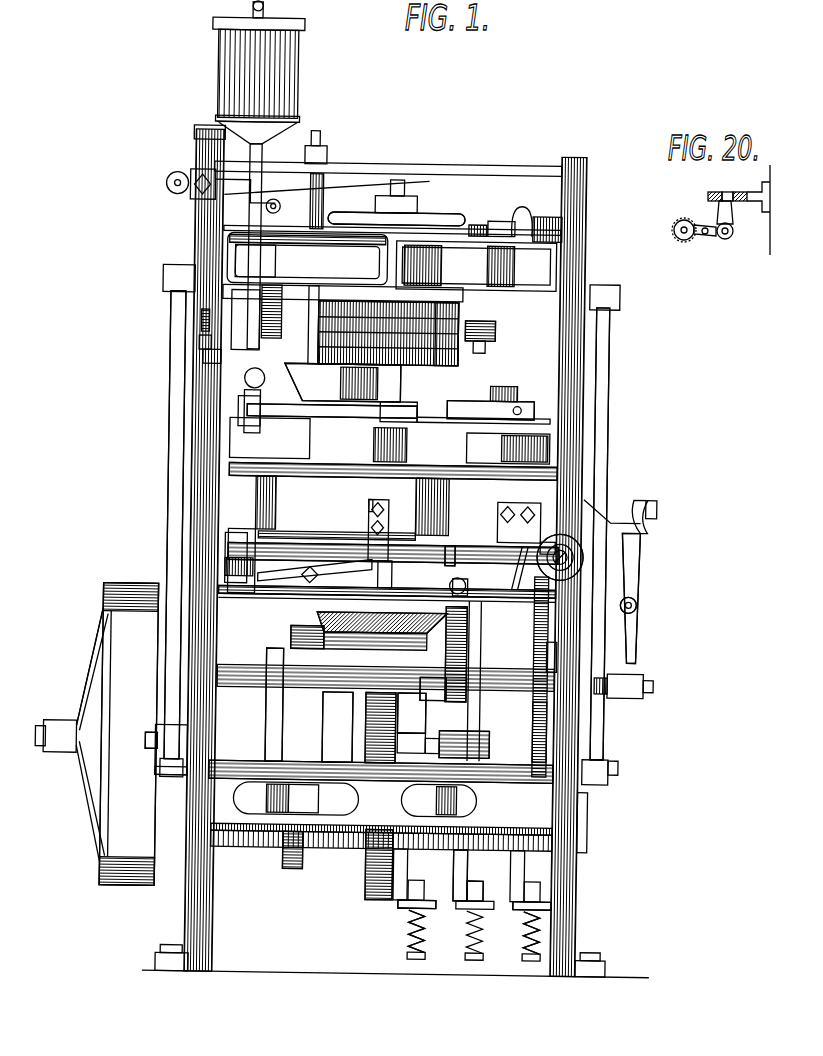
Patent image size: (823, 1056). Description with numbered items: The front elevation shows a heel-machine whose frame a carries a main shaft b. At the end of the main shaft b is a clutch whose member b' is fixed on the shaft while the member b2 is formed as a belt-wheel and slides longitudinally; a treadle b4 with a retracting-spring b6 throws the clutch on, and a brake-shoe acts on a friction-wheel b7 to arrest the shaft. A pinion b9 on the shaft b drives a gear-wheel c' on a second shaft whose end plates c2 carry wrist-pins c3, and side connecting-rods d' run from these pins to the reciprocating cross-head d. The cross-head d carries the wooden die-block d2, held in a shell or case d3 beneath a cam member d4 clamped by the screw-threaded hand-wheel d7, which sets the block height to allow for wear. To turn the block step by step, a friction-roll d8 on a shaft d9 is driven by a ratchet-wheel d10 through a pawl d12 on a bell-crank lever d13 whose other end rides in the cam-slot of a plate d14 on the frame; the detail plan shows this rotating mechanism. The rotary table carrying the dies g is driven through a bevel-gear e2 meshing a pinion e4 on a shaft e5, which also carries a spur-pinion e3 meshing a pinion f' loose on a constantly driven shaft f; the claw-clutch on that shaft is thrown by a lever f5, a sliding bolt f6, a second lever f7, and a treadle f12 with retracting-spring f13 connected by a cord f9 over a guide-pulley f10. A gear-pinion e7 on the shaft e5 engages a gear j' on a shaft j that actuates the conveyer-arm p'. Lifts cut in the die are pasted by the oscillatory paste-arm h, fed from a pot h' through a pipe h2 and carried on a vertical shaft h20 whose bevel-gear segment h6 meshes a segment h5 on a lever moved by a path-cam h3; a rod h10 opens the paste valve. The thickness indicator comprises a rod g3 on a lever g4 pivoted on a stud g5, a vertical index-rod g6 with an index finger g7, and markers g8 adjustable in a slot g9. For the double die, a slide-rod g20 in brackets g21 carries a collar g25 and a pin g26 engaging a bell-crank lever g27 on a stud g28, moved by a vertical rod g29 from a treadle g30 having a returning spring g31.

In FIG. 1, the paste pot h' is at (235, 174).
In FIG. 1, the pipe h2 is at (236, 257).
In FIG. 1, the slot g9 is at (198, 318).
In FIG. 1, the markers g8 is at (205, 340).
In FIG. 1, the index finger g7 is at (215, 356).
In FIG. 1, the rod h10 is at (236, 420).
In FIG. 1, the side connecting-rods d' is at (394, 528).
In FIG. 1, the vertical index-rod g6 is at (228, 547).
In FIG. 1, the vertical shaft h20 is at (240, 572).
In FIG. 1, the clutch member b2 is at (106, 622).
In FIG. 1, the clutch member b' is at (73, 666).
In FIG. 1, the wrist-pins c3 is at (150, 742).
In FIG. 1, the plates c2 is at (186, 780).
In FIG. 1, the path-cam h3 is at (295, 846).
In FIG. 1, the gear-wheel c' is at (356, 864).
In FIG. 1, the treadle b4 is at (403, 905).
In FIG. 1, the retracting-spring b6 is at (414, 940).
In FIG. 1, the treadle g30 is at (462, 913).
In FIG. 1, the returning spring g31 is at (486, 945).
In FIG. 1, the treadle f12 is at (556, 908).
In FIG. 1, the retracting-spring f13 is at (540, 935).
In FIG. 1, the main shaft b is at (417, 787).
In FIG. 1, the cord or chain f9 is at (548, 688).
In FIG. 1, the gear-pinion e7 is at (565, 655).
In FIG. 1, the gear j' is at (622, 612).
In FIG. 1, the lever f5 is at (640, 578).
In FIG. 1, the guide-pulley f10 is at (580, 560).
In FIG. 1, the second lever f7 is at (648, 528).
In FIG. 1, the sliding pin or bolt f6 is at (656, 500).
In FIG. 1, the brackets g21 is at (555, 512).
In FIG. 1, the cross-head d is at (507, 241).
In FIG. 1, the plate d14 is at (538, 215).
In FIG. 20, the plate d14 is at (742, 192).
In FIG. 1, the bell-crank lever d13 is at (520, 213).
In FIG. 20, the bell-crank lever d13 is at (740, 240).
In FIG. 1, the pawl or detent d12 is at (500, 218).
In FIG. 20, the pawl or detent d12 is at (705, 238).
In FIG. 1, the ratchet-wheel d10 is at (470, 222).
In FIG. 20, the ratchet-wheel d10 is at (682, 243).
In FIG. 1, the hand-wheel or nut d7 is at (438, 212).
In FIG. 1, the cam member d4 is at (398, 312).
In FIG. 1, the friction-roll d8 is at (492, 330).
In FIG. 1, the shaft d9 is at (484, 347).
In FIG. 1, the shell or case d3 is at (455, 362).
In FIG. 1, the wooden die-block d2 is at (398, 385).
In FIG. 1, the conveyer-arm p' is at (491, 397).
In FIG. 1, the paste-arm h is at (272, 437).
In FIG. 1, the die g is at (375, 449).
In FIG. 1, the frame a is at (320, 480).
In FIG. 1, the slide-rod g20 is at (393, 533).
In FIG. 1, the collar g25 is at (465, 526).
In FIG. 1, the pin g26 is at (519, 522).
In FIG. 1, the rod g3 is at (368, 545).
In FIG. 1, the bar or lever g4 is at (278, 578).
In FIG. 1, the stud g5 is at (313, 570).
In FIG. 1, the shaft j is at (386, 581).
In FIG. 1, the bell-crank lever g27 is at (488, 571).
In FIG. 1, the stud g28 is at (561, 565).
In FIG. 1, the spur-pinion e3 is at (470, 646).
In FIG. 1, the bevel-gear segment h6 is at (292, 632).
In FIG. 1, the bevel-gear segment h5 is at (285, 700).
In FIG. 1, the friction-wheel b7 is at (338, 700).
In FIG. 1, the bevel-gear e2 is at (372, 642).
In FIG. 1, the pinion b9 is at (385, 700).
In FIG. 1, the shaft e5 is at (410, 693).
In FIG. 1, the pinion e4 is at (440, 677).
In FIG. 1, the shaft f is at (411, 728).
In FIG. 1, the pinion f' is at (431, 728).
In FIG. 1, the vertical rod g29 is at (481, 741).